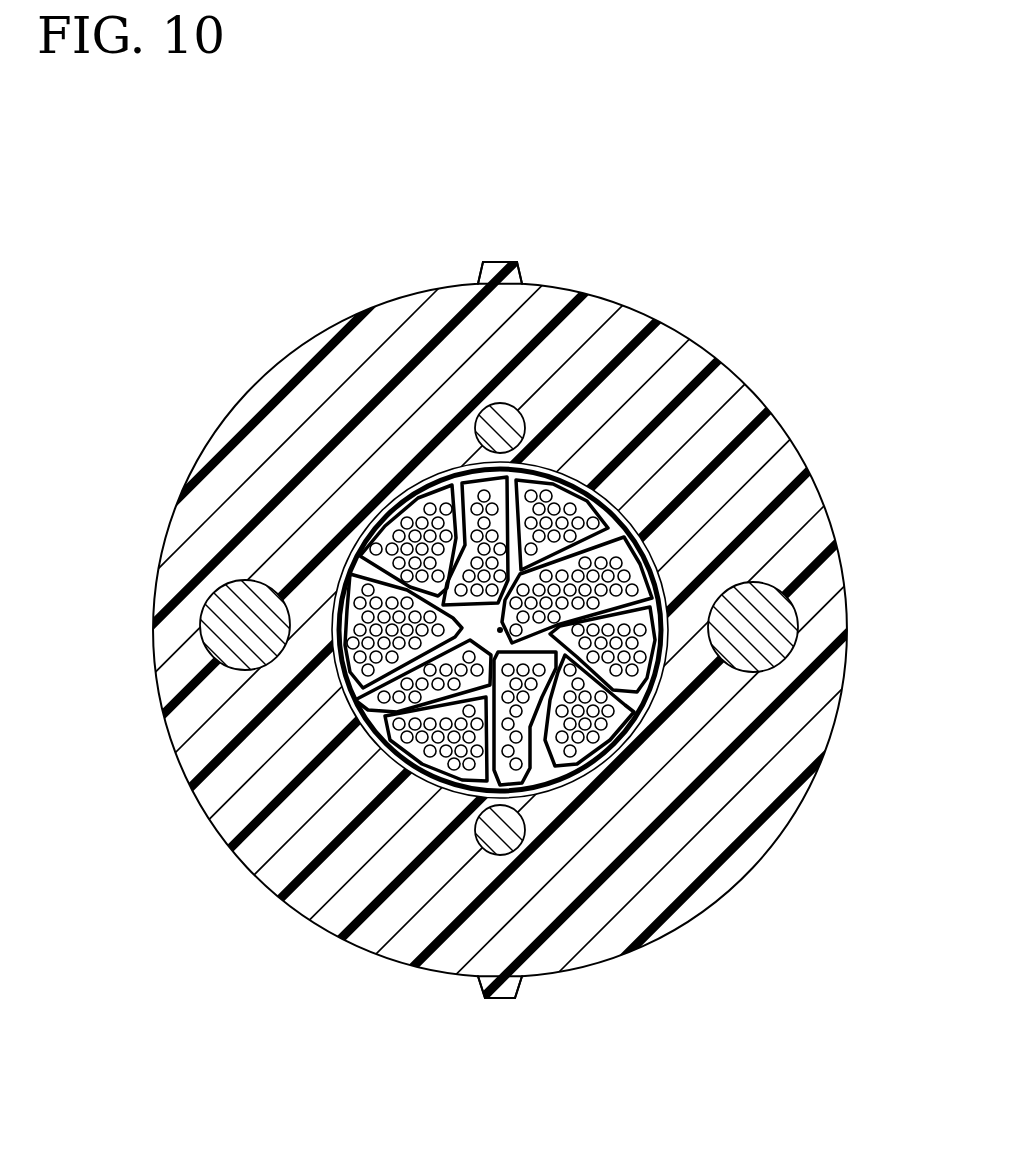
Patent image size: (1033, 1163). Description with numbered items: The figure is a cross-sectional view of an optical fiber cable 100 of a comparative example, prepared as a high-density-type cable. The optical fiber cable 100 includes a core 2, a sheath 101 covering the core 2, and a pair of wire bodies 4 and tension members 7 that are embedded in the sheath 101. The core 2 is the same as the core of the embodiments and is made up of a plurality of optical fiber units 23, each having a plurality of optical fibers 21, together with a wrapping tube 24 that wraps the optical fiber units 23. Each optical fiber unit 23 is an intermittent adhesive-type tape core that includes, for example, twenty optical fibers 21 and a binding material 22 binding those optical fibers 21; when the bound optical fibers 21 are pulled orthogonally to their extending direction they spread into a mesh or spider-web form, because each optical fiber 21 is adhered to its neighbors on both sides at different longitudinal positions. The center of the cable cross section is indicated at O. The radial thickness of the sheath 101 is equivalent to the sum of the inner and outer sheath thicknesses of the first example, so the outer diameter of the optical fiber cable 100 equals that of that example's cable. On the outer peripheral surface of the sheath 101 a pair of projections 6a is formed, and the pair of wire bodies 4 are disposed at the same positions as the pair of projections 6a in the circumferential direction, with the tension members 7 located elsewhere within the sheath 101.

The optical fiber cable 100 is at (182, 212).
The sheath 101 is at (380, 347).
The projection 6a is at (495, 265).
The wire body 4 is at (503, 425).
The tension member 7 is at (760, 628).
The core 2 is at (493, 759).
The optical fiber 21 is at (451, 778).
The binding material 22 is at (475, 772).
The optical fiber unit 23 is at (407, 904).
The wrapping tube 24 is at (557, 785).
The center of cable O is at (500, 630).